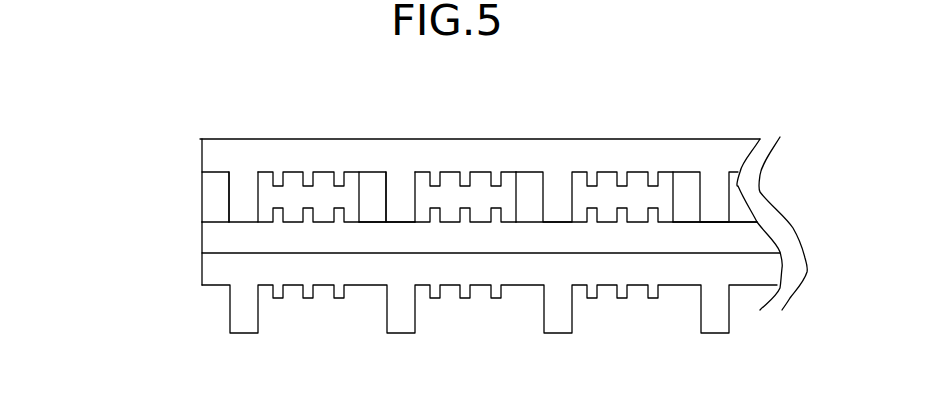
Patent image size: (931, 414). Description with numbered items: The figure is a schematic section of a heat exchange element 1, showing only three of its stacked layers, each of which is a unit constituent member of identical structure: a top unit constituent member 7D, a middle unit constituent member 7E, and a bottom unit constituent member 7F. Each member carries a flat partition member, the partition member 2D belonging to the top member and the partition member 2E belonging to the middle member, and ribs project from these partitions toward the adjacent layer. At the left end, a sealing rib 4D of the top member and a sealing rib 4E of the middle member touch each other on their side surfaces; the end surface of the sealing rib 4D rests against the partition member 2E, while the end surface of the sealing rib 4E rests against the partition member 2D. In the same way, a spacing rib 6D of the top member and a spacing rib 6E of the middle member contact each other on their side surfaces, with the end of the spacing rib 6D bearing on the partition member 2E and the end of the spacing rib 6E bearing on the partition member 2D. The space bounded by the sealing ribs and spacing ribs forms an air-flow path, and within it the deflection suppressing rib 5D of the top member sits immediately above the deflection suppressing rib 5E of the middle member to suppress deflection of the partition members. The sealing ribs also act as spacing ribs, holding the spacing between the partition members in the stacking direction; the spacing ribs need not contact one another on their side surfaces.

The heat exchange element 1 is at (91, 98).
The top unit constituent member 7D is at (233, 147).
The middle unit constituent member 7E is at (212, 228).
The bottom unit constituent member 7F is at (218, 265).
The sealing rib 4D is at (242, 188).
The sealing rib 4E is at (208, 190).
The deflection suppressing rib 5D is at (308, 187).
The deflection suppressing rib 5E is at (310, 217).
The spacing rib 6D is at (393, 185).
The spacing rib 6E is at (372, 205).
The partition member 2D is at (450, 187).
The partition member 2E is at (450, 220).